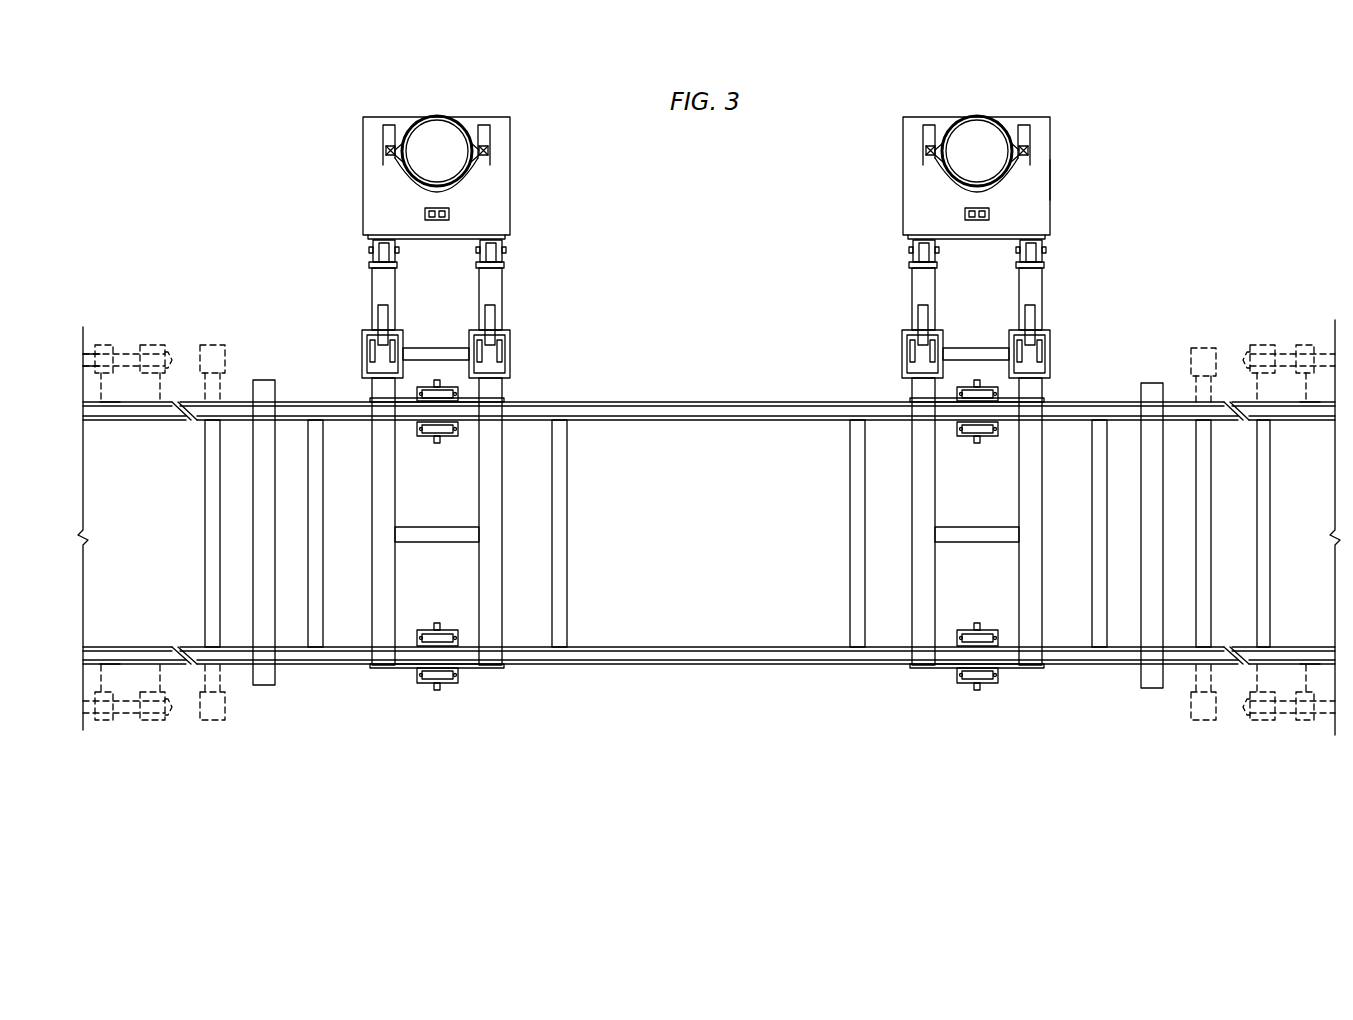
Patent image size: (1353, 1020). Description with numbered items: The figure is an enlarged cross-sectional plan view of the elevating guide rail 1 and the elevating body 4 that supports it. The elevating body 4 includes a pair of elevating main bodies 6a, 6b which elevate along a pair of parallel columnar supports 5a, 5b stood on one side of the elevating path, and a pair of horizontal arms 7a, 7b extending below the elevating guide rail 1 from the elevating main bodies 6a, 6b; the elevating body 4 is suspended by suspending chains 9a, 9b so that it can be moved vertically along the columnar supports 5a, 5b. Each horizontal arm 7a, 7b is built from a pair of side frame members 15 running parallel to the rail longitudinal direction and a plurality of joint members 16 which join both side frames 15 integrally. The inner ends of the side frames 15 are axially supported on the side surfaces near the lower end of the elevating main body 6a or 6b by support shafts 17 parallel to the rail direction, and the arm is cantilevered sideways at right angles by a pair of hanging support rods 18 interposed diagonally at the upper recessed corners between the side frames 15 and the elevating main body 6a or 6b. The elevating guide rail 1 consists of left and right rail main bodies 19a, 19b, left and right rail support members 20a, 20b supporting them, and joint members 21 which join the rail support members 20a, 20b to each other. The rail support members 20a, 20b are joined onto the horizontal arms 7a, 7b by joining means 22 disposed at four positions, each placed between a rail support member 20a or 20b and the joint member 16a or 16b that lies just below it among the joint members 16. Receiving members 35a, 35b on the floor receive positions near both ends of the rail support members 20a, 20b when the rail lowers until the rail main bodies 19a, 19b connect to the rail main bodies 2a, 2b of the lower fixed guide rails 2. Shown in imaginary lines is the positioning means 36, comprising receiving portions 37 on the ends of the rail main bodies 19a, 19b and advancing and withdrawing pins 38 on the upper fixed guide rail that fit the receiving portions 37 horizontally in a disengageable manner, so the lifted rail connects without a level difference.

The elevating guide rail 1 is at (686, 666).
The lower fixed guide rails 2 is at (108, 347).
The rail main body of lower fixed guide rail 2a is at (137, 652).
The rail main body of lower fixed guide rail 2b is at (137, 422).
The elevating body 4 is at (1053, 178).
The columnar support 5a is at (977, 116).
The columnar support 5b is at (437, 116).
The elevating main body 6a is at (918, 195).
The elevating main body 6b is at (372, 185).
The horizontal arm 7a is at (1043, 293).
The horizontal arm 7b is at (371, 290).
The suspending chain 9a is at (989, 214).
The suspending chain 9b is at (449, 214).
The side frame member 15 is at (490, 511).
The joint member 16 is at (437, 352).
The joint member 16a is at (463, 668).
The joint member 16b is at (473, 403).
The support shaft 17 is at (369, 252).
The hanging support rod 18 is at (380, 325).
The rail main body 19a is at (757, 666).
The rail main body 19b is at (672, 405).
The rail support member 20a is at (647, 647).
The rail support member 20b is at (740, 421).
The joint member 21 is at (212, 552).
The joining means 22 is at (416, 395).
The receiving member 35a is at (1142, 610).
The receiving member 35b is at (253, 517).
The positioning means 36 is at (157, 346).
The receiving portion 37 is at (218, 345).
The advancing and withdrawing pin 38 is at (130, 345).